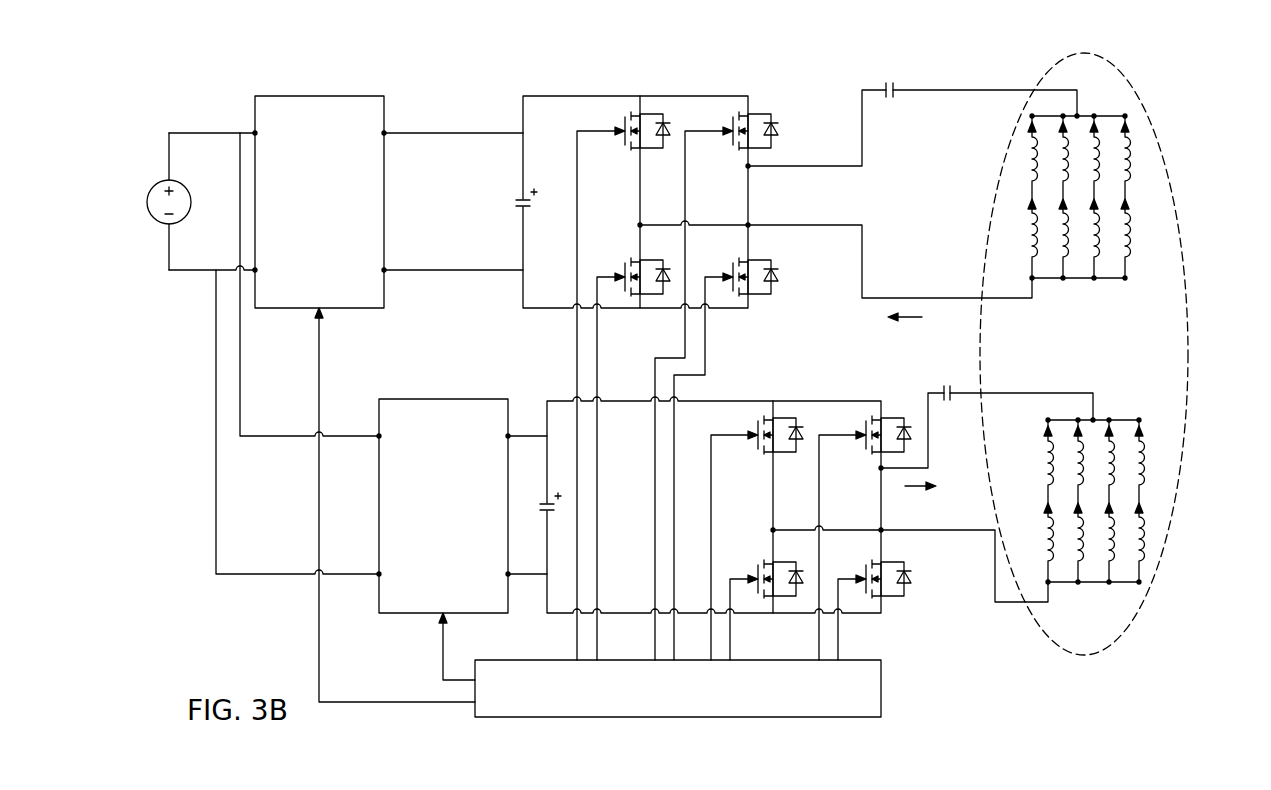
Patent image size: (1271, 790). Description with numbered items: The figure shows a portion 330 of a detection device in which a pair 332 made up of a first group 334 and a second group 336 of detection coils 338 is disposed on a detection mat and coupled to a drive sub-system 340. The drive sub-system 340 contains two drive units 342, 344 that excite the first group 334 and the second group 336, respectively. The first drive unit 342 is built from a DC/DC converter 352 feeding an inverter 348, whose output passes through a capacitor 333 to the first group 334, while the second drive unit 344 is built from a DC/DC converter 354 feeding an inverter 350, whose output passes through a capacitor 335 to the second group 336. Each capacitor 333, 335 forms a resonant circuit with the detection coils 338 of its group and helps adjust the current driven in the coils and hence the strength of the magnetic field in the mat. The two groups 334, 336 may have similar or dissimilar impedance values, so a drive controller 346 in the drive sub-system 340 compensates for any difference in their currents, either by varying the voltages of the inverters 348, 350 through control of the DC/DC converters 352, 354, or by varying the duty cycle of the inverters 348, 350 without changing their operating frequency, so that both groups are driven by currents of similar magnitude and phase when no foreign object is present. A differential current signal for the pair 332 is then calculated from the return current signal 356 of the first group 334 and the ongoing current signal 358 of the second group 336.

The portion of a detection device 330 is at (1055, 692).
The pair of groups of detection coils 332 is at (1146, 108).
The capacitor 333 is at (887, 85).
The first group of detection coils 334 is at (1146, 153).
The capacitor 335 is at (944, 388).
The second group of detection coils 336 is at (1158, 457).
The detection coils 338 is at (1141, 440).
The drive sub-system 340 is at (600, 85).
The first drive unit 342 is at (482, 118).
The second drive unit 344 is at (387, 388).
The drive controller 346 is at (881, 690).
The inverter 348 is at (697, 96).
The inverter 350 is at (742, 401).
The DC/DC converter 352 is at (322, 96).
The DC/DC converter 354 is at (432, 399).
The return current signal I1 356 is at (910, 323).
The ongoing current signal I2 358 is at (915, 491).